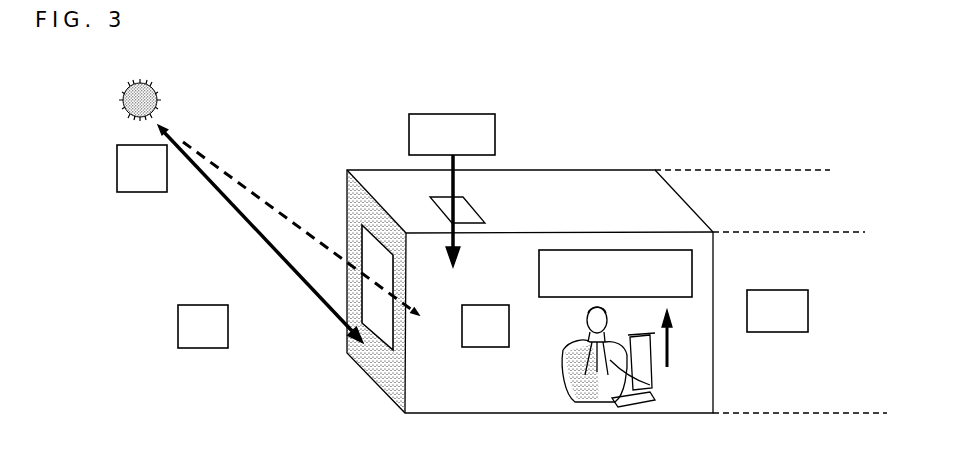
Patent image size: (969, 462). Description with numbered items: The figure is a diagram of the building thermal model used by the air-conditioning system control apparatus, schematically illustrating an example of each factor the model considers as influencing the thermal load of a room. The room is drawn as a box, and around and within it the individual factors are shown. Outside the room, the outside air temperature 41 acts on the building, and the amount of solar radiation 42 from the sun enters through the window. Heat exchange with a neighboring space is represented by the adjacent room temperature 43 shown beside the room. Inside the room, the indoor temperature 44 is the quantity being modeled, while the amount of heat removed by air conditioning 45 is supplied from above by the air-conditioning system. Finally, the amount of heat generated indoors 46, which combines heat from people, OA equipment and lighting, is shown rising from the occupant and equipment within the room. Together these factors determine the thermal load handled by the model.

The outside air temperature 41 is at (178, 336).
The amount of solar radiation 42 is at (117, 172).
The adjacent room temperature 43 is at (808, 318).
The indoor temperature 44 is at (472, 348).
The amount of heat removed by air conditioning 45 is at (495, 122).
The amount of heat generated indoors 46 is at (572, 250).